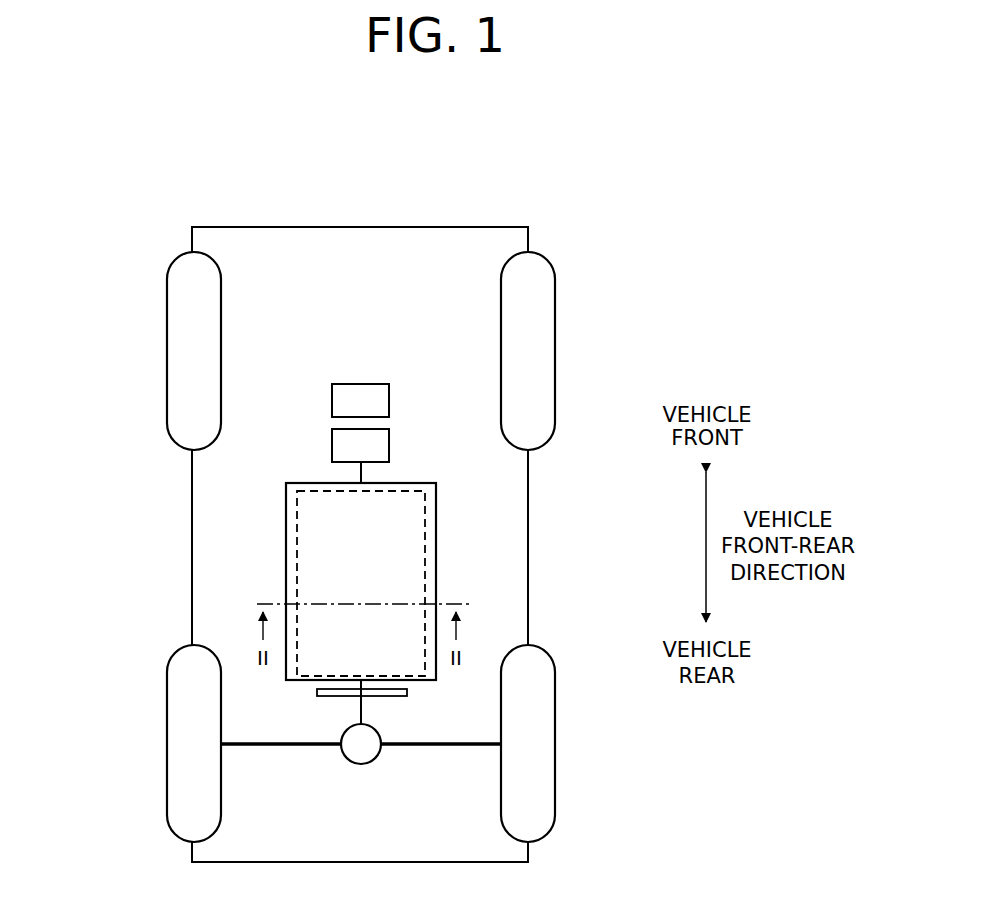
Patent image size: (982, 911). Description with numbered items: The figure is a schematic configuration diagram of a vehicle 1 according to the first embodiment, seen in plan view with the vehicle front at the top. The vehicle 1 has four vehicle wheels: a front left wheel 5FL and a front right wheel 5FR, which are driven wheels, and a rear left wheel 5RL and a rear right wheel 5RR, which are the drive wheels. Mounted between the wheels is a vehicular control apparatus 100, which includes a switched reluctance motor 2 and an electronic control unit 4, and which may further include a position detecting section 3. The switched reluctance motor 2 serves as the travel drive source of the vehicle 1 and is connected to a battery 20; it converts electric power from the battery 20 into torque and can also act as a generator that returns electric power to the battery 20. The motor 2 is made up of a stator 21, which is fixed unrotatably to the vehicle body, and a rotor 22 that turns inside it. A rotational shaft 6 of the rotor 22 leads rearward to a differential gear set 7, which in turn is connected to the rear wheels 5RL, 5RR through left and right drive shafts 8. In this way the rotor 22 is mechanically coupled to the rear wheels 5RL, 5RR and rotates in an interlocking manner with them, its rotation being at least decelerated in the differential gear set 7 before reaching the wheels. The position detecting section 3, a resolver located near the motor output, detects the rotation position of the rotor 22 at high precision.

The vehicle 1 is at (365, 222).
The switched reluctance motor 2 is at (399, 581).
The position detecting section 3 is at (407, 691).
The electronic control unit 4 is at (389, 403).
The front left wheel 5FL is at (167, 323).
The front right wheel 5FR is at (555, 322).
The rear left wheel 5RL is at (167, 764).
The rear right wheel 5RR is at (555, 763).
The rotational shaft 6 is at (363, 712).
The differential gear set 7 is at (361, 766).
The drive shafts 8 is at (258, 740).
The battery 20 is at (332, 440).
The stator 21 is at (286, 503).
The rotor 22 is at (297, 540).
The vehicular control apparatus 100 is at (430, 532).